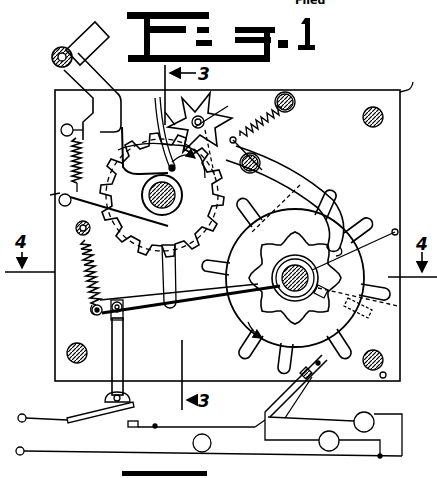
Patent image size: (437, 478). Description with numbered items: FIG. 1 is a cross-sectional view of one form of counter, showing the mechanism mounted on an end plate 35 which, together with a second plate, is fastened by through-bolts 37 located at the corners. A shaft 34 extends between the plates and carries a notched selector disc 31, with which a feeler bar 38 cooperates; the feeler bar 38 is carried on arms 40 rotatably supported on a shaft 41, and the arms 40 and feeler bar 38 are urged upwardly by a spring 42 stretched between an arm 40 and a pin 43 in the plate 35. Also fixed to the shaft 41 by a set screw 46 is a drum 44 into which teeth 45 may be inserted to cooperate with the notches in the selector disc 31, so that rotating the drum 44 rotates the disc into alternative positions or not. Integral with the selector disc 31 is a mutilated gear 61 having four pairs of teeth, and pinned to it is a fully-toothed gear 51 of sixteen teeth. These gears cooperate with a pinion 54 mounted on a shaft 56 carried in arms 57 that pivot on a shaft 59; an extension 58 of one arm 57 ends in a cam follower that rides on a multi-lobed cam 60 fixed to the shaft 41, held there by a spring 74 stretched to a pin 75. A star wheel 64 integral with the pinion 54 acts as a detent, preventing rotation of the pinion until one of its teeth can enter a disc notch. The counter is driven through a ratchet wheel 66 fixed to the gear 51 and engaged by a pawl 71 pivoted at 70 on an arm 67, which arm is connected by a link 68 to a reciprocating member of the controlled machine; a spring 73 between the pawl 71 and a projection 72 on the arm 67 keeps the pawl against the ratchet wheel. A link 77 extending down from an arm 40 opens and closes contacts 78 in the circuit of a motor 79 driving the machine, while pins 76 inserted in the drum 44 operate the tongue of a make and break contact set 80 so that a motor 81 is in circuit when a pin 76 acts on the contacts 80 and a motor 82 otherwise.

The notched selector disc 31 is at (270, 247).
The shaft 34 is at (155, 140).
The end plate 35 is at (418, 80).
The through-bolts 37 is at (66, 353).
The feeler bar 38 is at (166, 274).
The arms 40 is at (146, 305).
The shaft 41 is at (216, 308).
The spring 42 is at (85, 276).
The pin 43 is at (77, 225).
The drum 44 is at (386, 307).
The teeth 45 is at (396, 214).
The set screw 46 is at (370, 318).
The fully-toothed gear 51 is at (103, 272).
The pinion 54 is at (166, 115).
The shaft 56 is at (222, 109).
The arms 57 is at (238, 141).
The extension 58 is at (325, 195).
The shaft 59 is at (262, 160).
The multi-lobed cam 60 is at (307, 227).
The mutilated gear 61 is at (236, 190).
The star wheel 64 is at (215, 110).
The ratchet wheel 66 is at (175, 108).
The arm 67 is at (68, 73).
The link 68 is at (78, 40).
The pivot 70 is at (70, 186).
The pawl 71 is at (60, 195).
The projection 72 is at (61, 128).
The spring 73 is at (70, 148).
The spring 74 is at (280, 118).
The pin 75 is at (290, 98).
The pins 76 is at (254, 345).
The link 77 is at (124, 353).
The contacts 78 is at (128, 419).
The motor 79 is at (193, 442).
The make and break contacts 80 is at (313, 373).
The motor 81 is at (374, 414).
The motor 82 is at (340, 448).